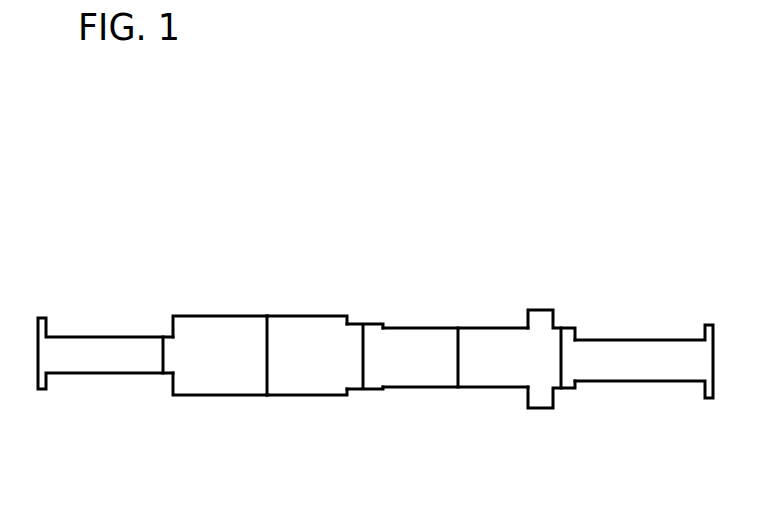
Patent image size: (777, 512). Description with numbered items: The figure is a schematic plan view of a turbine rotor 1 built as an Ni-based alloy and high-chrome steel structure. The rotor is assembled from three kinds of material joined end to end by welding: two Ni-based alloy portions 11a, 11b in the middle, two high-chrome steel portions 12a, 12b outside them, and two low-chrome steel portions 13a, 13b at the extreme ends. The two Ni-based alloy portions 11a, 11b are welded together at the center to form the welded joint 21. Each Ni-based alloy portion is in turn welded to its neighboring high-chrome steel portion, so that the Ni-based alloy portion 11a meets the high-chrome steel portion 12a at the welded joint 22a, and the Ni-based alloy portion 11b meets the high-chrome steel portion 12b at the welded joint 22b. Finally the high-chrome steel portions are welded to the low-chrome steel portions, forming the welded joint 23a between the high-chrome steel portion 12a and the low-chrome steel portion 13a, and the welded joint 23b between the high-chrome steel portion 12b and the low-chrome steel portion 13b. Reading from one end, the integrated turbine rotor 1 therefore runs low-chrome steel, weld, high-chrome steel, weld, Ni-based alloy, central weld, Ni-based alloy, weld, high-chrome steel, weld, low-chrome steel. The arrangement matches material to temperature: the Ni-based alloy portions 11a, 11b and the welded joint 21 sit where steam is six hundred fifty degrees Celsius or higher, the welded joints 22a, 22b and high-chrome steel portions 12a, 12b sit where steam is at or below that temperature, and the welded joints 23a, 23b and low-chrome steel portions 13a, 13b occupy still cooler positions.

The turbine rotor 1 is at (184, 231).
The Ni-based alloy portion 11a is at (305, 396).
The Ni-based alloy portion 11b is at (415, 388).
The high-chrome steel portion 12a is at (213, 396).
The high-chrome steel portion 12b is at (500, 388).
The low-chrome steel portion 13a is at (97, 375).
The low-chrome steel portion 13b is at (633, 382).
The welded joint 21 is at (364, 355).
The welded joint 22a is at (268, 346).
The welded joint 22b is at (459, 351).
The welded joint 23a is at (162, 357).
The welded joint 23b is at (562, 362).